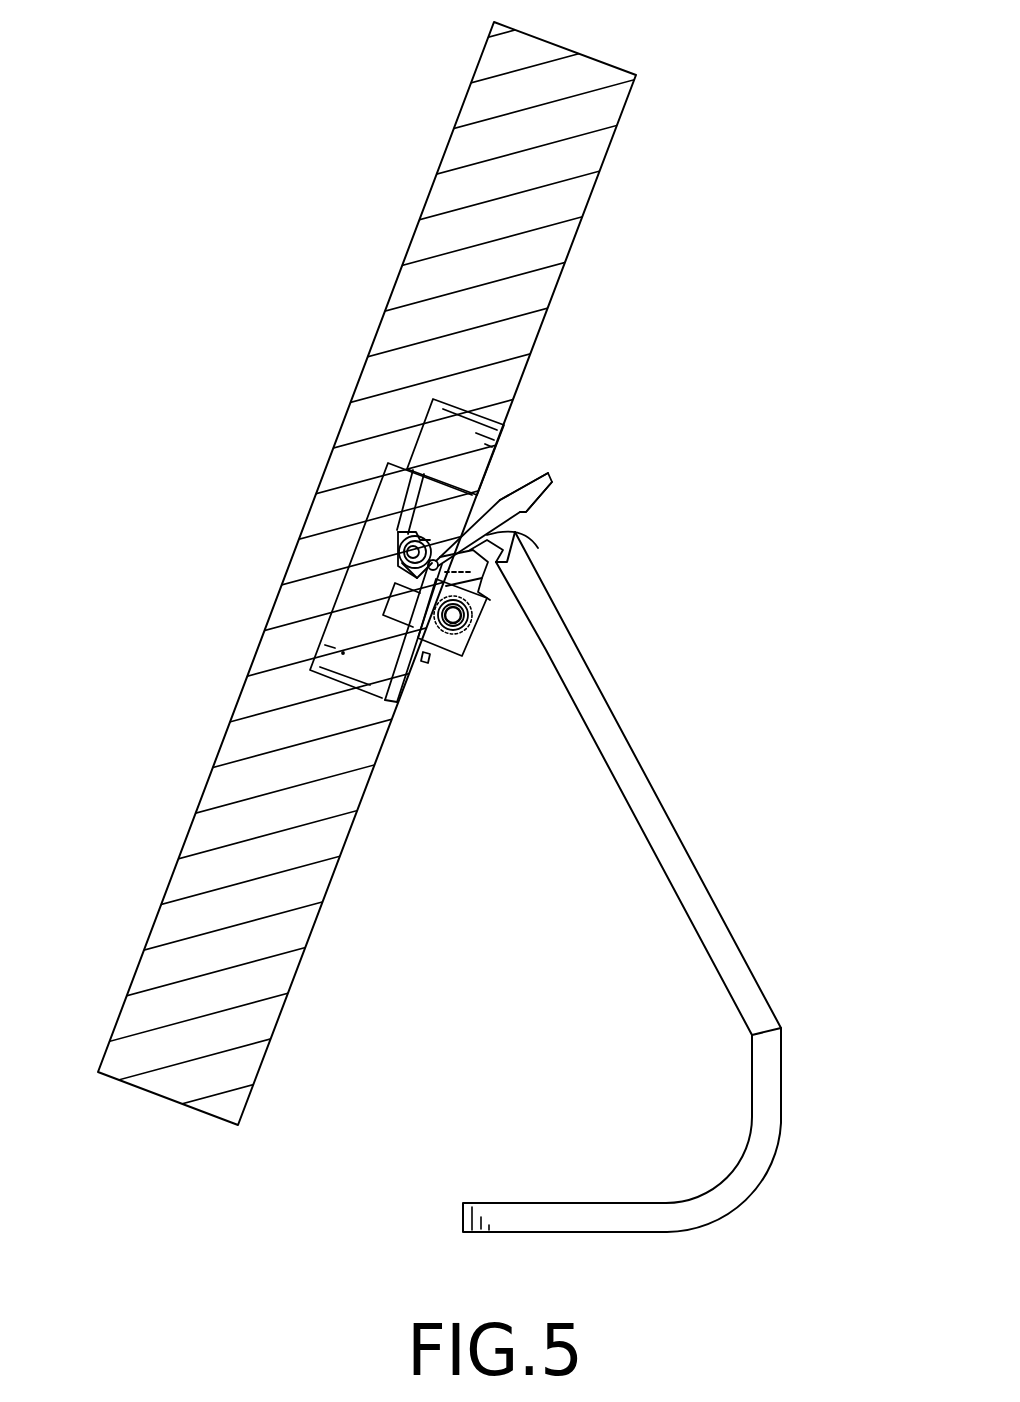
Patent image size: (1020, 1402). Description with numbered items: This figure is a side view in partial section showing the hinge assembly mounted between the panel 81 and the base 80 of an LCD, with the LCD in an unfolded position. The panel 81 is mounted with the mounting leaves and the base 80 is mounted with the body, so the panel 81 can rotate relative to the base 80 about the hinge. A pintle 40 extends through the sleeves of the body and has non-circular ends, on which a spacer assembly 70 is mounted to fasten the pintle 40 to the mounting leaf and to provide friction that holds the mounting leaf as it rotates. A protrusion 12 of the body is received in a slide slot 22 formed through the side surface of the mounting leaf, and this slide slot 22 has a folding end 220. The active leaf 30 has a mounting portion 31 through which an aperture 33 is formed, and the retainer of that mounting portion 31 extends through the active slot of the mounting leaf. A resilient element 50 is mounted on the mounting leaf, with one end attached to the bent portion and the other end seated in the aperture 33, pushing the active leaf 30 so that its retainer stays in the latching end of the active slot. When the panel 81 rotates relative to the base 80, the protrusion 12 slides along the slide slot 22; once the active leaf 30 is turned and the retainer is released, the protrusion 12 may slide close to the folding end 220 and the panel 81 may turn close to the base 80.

The protrusion 12 is at (430, 580).
The slide slot 22 is at (488, 578).
The active leaf 30 is at (553, 479).
The mounting portion 31 is at (497, 497).
The aperture 33 is at (505, 524).
The pintle 40 is at (402, 548).
The resilient element 50 is at (538, 548).
The spacer assembly 70 is at (463, 637).
The base 80 is at (667, 833).
The panel 81 is at (543, 288).
The folding end 220 is at (503, 587).